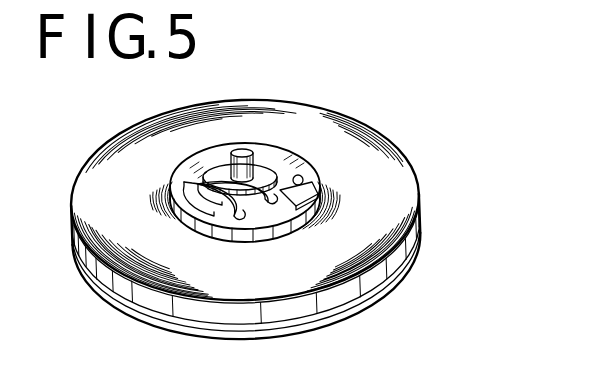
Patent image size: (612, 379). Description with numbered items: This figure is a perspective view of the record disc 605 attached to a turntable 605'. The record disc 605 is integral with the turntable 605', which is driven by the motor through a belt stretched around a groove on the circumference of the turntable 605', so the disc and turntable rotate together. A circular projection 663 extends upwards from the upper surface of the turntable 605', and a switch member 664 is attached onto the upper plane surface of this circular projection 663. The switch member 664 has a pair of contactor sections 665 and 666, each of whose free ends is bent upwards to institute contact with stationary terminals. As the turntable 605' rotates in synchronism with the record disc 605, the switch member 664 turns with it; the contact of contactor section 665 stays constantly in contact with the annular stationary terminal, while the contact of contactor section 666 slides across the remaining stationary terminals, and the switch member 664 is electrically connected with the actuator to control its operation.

The record disc 605 is at (273, 219).
The turntable 605' is at (290, 263).
The circular projection 663 is at (316, 168).
The switch member 664 is at (266, 152).
The contactor section 665 is at (177, 193).
The contactor section 666 is at (172, 207).